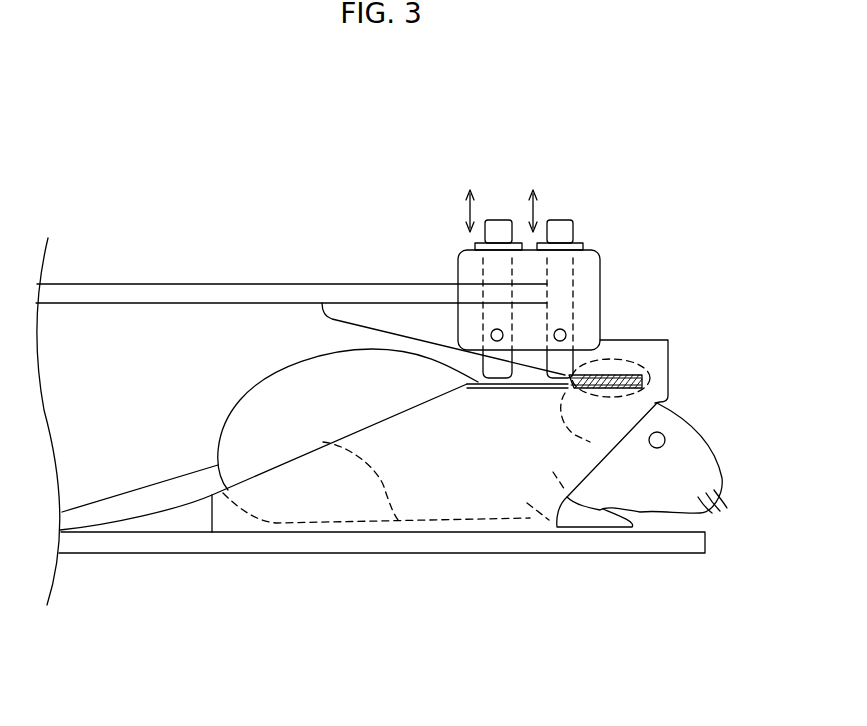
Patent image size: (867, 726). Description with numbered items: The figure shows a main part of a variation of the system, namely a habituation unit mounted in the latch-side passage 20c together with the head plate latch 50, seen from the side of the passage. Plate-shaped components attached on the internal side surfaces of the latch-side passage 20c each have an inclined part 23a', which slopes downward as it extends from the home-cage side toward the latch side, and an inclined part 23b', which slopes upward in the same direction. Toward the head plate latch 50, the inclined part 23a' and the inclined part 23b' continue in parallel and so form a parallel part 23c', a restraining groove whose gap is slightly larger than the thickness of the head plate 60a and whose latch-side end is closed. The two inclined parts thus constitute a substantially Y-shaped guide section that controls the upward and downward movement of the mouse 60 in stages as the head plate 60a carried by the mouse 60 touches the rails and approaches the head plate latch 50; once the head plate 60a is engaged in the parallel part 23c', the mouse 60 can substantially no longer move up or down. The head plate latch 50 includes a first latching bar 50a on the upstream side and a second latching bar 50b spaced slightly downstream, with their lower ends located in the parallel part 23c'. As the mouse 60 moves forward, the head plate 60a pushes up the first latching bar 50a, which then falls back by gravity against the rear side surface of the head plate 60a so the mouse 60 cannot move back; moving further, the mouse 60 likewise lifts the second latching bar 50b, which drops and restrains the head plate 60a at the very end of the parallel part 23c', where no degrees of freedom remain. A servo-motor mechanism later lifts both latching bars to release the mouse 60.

The latch-side passage 20c is at (183, 284).
The inclined part 23a' is at (445, 306).
The inclined part 23b' is at (270, 500).
The parallel part 23c' is at (636, 309).
The head plate latch 50 is at (529, 235).
The first latching bar 50a is at (500, 220).
The second latching bar 50b is at (556, 195).
The mouse 60 is at (710, 467).
The head plate 60a is at (640, 360).